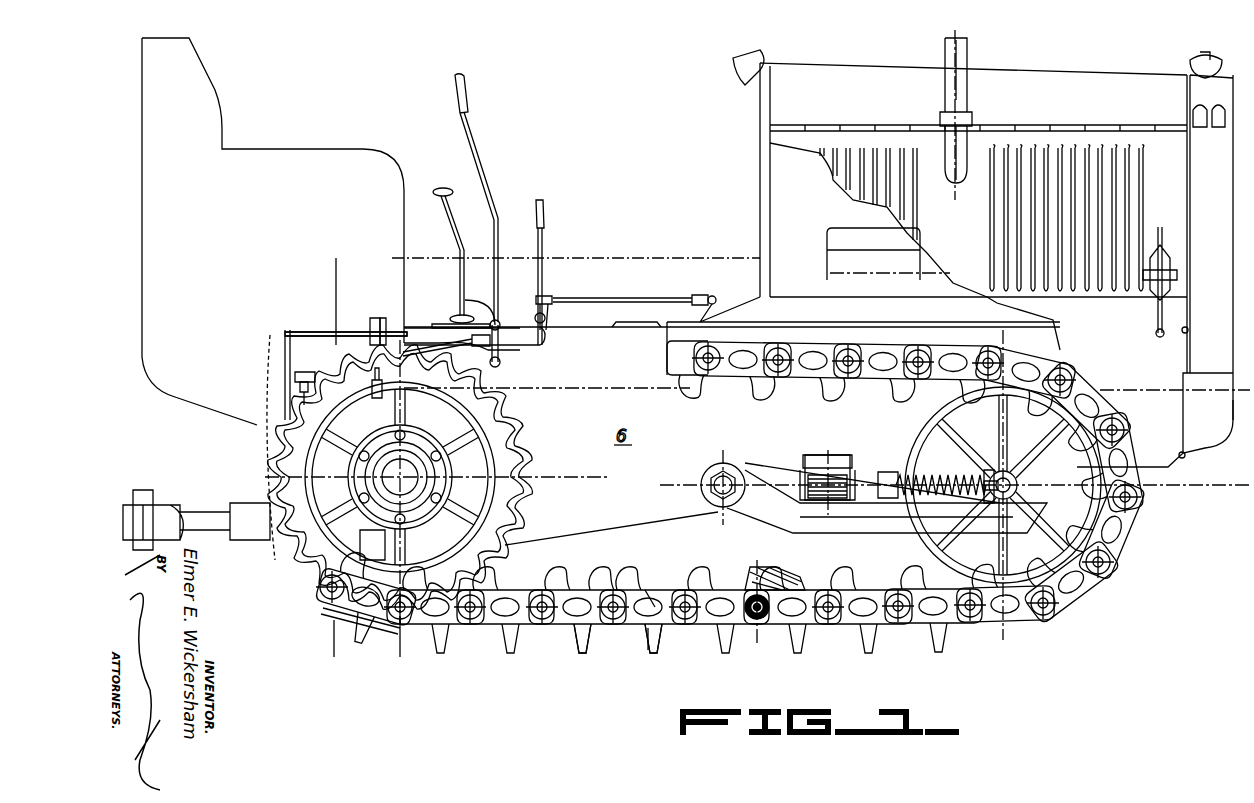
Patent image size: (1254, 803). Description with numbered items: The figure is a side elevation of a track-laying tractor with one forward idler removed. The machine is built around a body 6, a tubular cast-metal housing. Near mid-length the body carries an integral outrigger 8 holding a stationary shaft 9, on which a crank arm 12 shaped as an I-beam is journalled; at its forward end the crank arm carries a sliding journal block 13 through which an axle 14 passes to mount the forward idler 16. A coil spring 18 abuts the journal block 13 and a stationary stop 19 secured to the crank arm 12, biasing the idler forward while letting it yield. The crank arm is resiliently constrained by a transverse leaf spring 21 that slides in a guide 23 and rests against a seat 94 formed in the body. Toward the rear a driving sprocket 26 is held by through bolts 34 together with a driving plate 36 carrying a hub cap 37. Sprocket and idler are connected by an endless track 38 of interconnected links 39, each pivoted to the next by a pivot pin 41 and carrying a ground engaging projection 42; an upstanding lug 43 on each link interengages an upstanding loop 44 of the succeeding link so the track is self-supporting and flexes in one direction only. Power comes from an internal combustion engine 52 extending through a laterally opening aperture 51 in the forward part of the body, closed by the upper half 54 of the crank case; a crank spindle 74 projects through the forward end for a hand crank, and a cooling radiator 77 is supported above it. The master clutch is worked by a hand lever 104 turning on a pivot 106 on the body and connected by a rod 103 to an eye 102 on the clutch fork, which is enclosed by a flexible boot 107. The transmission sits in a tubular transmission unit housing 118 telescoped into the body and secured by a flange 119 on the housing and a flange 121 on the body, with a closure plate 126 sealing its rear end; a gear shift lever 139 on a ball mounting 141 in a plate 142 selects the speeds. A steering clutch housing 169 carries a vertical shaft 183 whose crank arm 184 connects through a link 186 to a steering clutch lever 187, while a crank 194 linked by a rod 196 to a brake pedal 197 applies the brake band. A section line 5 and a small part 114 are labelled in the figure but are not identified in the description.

The section line 5 is at (390, 660).
The body 6 is at (317, 660).
The outrigger 8 is at (700, 476).
The stationary shaft 9 is at (708, 491).
The crank arm 12 is at (846, 533).
The sliding journal block 13 is at (963, 504).
The axle 14 is at (1000, 505).
The idler 16 is at (913, 437).
The coil spring 18 is at (916, 462).
The stationary stop 19 is at (880, 472).
The transverse leaf spring 21 is at (805, 463).
The guide 23 is at (806, 484).
The driving sprocket 26 is at (437, 482).
The through bolts 34 is at (461, 483).
The driving plate 36 is at (421, 520).
The hub cap 37 is at (410, 466).
The endless chain or track 38 is at (583, 580).
The link 39 is at (575, 627).
The pivot pin 41 is at (765, 620).
The ground engaging projection 42 is at (654, 642).
The upstanding lug 43 is at (686, 584).
The upstanding loop 44 is at (750, 578).
The laterally opening aperture 51 is at (897, 325).
The internal combustion engine 52 is at (827, 242).
The upper half of the crank case 54 is at (800, 300).
The crank spindle 74 is at (1235, 420).
The cooling radiator 77 is at (1215, 351).
The seat 94 is at (843, 460).
The eye 102 is at (705, 300).
The rod 103 is at (625, 300).
The hand lever 104 is at (545, 230).
The pivot 106 is at (548, 322).
The flexible boot 107 is at (712, 312).
The foot plate 114 is at (635, 326).
The transmission unit housing 118 is at (310, 332).
The flange 119 is at (372, 320).
The flange 121 is at (385, 318).
The closure plate 126 is at (300, 386).
The gear shift lever 139 is at (454, 232).
The ball mounting 141 is at (458, 315).
The plate 142 is at (445, 324).
The steering clutch housing 169 is at (300, 460).
The vertical shaft 183 is at (304, 392).
The crank arm 184 is at (295, 375).
The link 186 is at (448, 345).
The steering clutch lever 187 is at (478, 151).
The crank 194 is at (372, 388).
The rod 196 is at (492, 364).
The brake pedal 197 is at (489, 302).